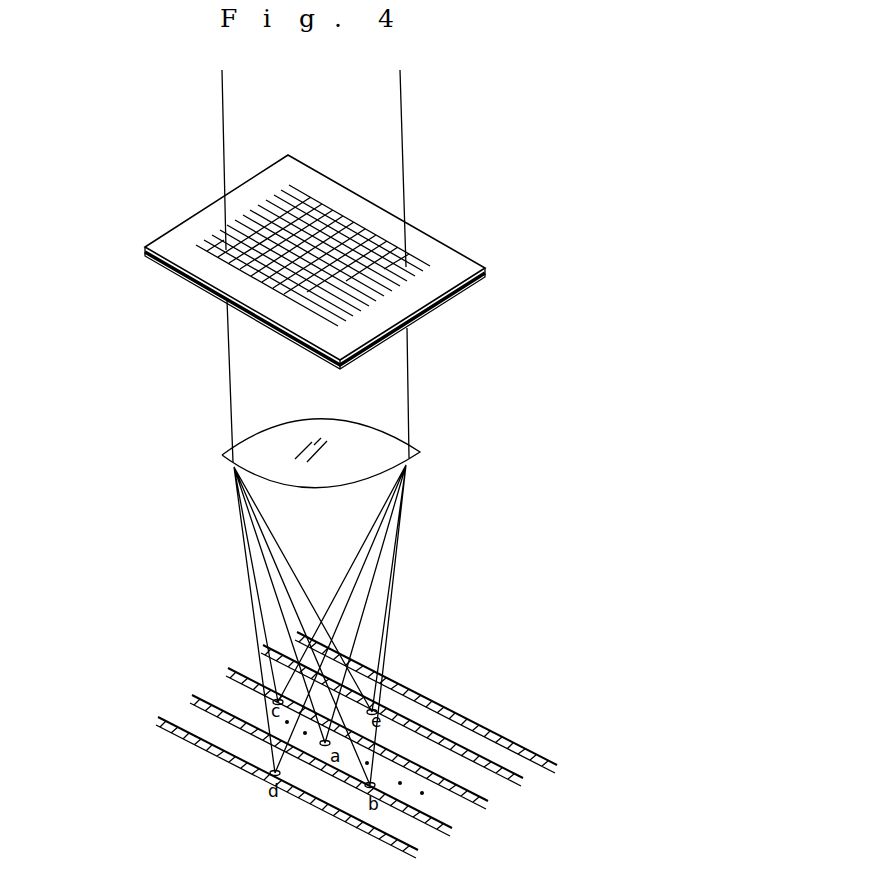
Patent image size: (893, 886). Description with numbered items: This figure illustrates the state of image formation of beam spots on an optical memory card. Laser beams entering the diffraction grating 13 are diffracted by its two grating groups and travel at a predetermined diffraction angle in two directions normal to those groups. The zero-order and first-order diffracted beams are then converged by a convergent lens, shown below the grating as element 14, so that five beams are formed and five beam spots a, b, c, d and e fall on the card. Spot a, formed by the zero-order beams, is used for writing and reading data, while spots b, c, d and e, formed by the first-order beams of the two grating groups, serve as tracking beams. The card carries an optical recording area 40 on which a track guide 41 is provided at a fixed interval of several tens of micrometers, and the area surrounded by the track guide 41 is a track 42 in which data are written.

The diffraction grating 13 is at (441, 256).
The lens 14 is at (392, 447).
The optical recording area 40 is at (479, 709).
The track guide 41 is at (337, 813).
The track 42 is at (521, 763).